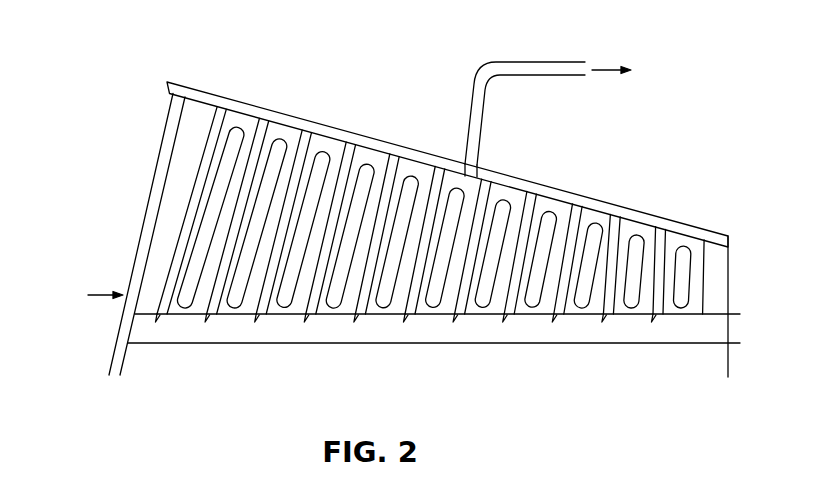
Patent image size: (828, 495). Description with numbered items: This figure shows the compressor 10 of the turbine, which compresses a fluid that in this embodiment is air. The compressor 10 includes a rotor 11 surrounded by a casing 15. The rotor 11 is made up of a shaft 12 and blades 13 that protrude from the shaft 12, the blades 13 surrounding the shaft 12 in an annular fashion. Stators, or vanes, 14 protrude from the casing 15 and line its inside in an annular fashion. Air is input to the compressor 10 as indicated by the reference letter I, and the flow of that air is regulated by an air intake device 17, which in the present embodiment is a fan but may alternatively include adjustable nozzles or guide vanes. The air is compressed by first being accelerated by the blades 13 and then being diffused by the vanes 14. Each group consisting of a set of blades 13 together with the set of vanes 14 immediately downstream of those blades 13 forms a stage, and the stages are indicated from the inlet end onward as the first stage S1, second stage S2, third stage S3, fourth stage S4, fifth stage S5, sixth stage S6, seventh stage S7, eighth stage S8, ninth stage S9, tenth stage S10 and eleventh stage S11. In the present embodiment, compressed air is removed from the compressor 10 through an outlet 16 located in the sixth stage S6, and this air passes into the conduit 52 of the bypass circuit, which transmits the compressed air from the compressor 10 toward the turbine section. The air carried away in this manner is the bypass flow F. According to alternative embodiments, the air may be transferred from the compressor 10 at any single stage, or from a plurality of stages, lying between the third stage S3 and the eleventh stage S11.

The compressor 10 is at (129, 40).
The rotor 11 is at (204, 341).
The shaft 12 is at (318, 345).
The blades 13 is at (236, 137).
The vanes 14 is at (228, 177).
The casing 15 is at (187, 84).
The outlet 16 is at (464, 160).
The air intake device 17 is at (152, 212).
The conduit 52 is at (524, 61).
The first stage S1 is at (222, 92).
The second stage S2 is at (282, 108).
The third stage S3 is at (334, 106).
The fourth stage S4 is at (379, 118).
The fifth stage S5 is at (424, 130).
The sixth stage S6 is at (513, 154).
The seventh stage S7 is at (557, 166).
The eighth stage S8 is at (601, 178).
The ninth stage S9 is at (644, 190).
The tenth stage S10 is at (686, 202).
The eleventh stage S11 is at (730, 214).
The air input I is at (98, 295).
The bypass flow F is at (618, 70).